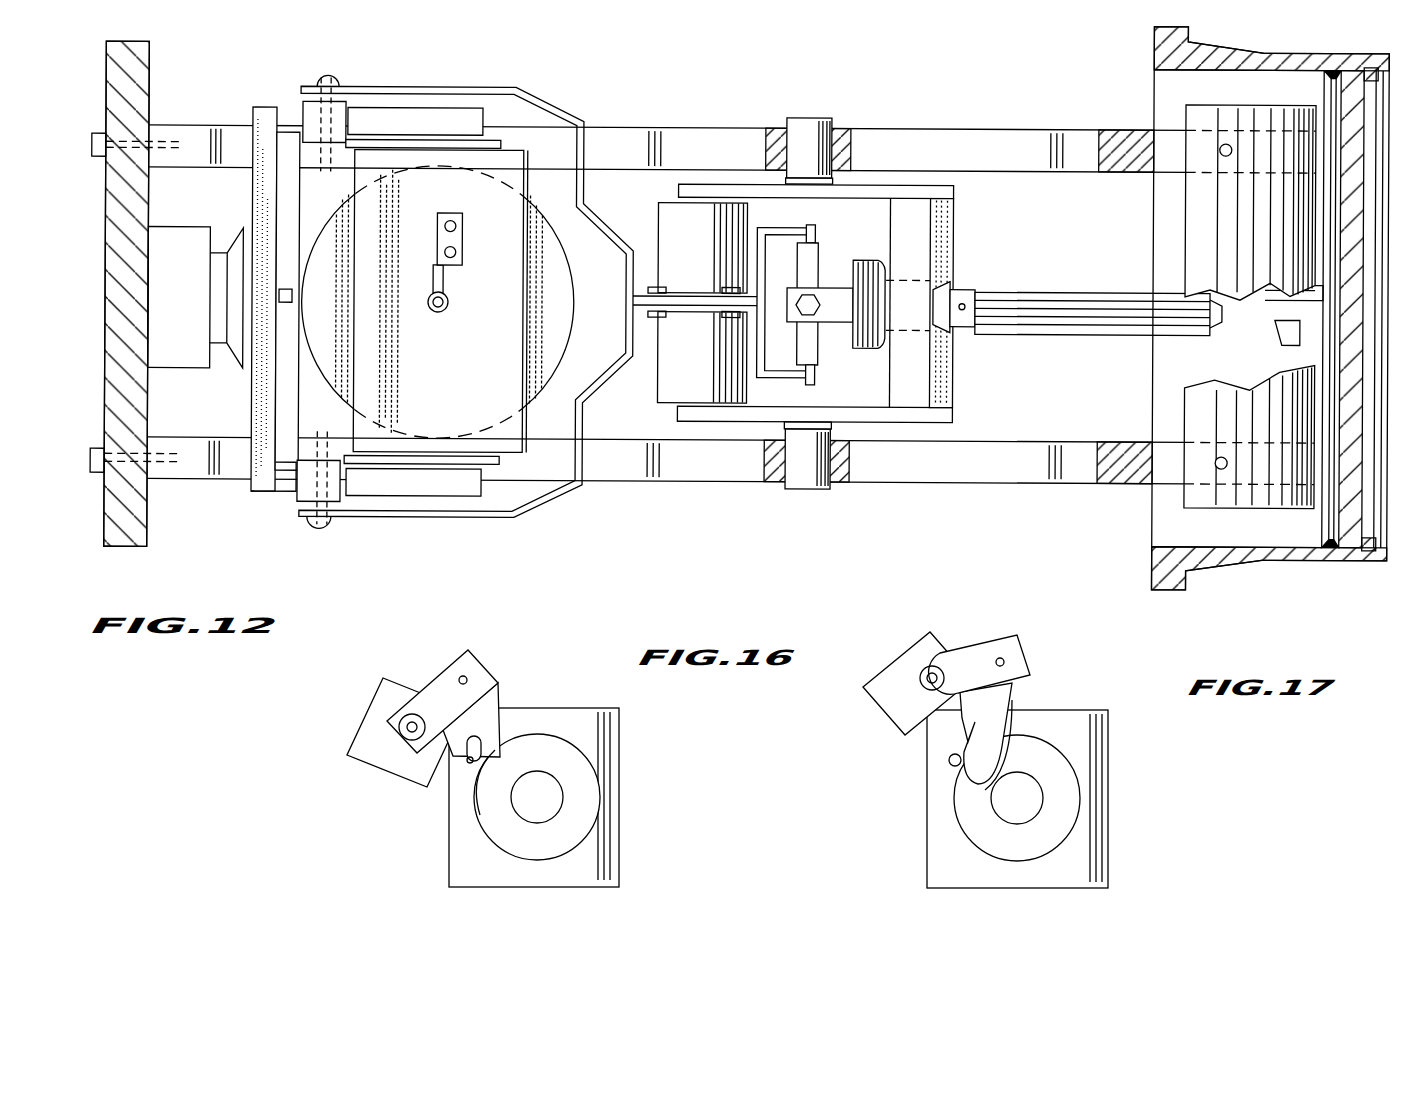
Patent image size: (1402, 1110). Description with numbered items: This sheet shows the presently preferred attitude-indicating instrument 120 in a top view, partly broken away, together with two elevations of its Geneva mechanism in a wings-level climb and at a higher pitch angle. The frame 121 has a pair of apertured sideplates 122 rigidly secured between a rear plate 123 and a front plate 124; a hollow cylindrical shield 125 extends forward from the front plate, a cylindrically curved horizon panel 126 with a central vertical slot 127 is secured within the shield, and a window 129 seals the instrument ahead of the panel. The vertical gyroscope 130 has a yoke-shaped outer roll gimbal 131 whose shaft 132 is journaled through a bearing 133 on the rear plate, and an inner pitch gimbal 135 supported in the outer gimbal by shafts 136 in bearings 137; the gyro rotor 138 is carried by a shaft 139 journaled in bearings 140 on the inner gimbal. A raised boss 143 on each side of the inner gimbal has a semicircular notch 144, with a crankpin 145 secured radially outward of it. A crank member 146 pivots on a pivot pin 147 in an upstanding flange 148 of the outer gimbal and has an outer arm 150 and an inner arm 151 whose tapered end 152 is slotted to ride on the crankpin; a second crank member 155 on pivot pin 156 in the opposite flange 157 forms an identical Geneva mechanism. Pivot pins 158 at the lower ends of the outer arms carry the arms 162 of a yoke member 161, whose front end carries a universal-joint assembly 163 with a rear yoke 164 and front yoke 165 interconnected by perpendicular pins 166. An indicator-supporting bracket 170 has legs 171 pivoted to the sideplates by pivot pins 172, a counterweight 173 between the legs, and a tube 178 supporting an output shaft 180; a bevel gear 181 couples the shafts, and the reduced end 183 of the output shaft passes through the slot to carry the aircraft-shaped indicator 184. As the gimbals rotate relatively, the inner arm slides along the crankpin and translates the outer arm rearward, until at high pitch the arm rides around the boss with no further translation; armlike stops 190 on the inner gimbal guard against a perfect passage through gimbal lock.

In FIG. 12, the attitude-indicating instrument 120 is at (718, 510).
In FIG. 12, the frame 121 is at (978, 126).
In FIG. 12, the apertured sideplates 122 is at (688, 136).
In FIG. 12, the rear plate 123 is at (150, 72).
In FIG. 12, the front plate 124 is at (1153, 28).
In FIG. 12, the hollow cylindrical shield 125 is at (1300, 58).
In FIG. 12, the horizon panel 126 is at (1290, 84).
In FIG. 12, the slot 127 is at (1268, 286).
In FIG. 12, the window 129 is at (1345, 537).
In FIG. 12, the vertical gyroscope 130 is at (240, 190).
In FIG. 12, the outer roll gimbal 131 is at (258, 420).
In FIG. 16, the outer roll gimbal 131 is at (370, 772).
In FIG. 17, the outer roll gimbal 131 is at (890, 724).
In FIG. 12, the shaft 132 is at (222, 352).
In FIG. 12, the bearing 133 is at (186, 228).
In FIG. 12, the inner pitch gimbal 135 is at (534, 416).
In FIG. 16, the inner pitch gimbal 135 is at (620, 765).
In FIG. 17, the inner pitch gimbal 135 is at (1108, 768).
In FIG. 12, the shafts 136 is at (483, 130).
In FIG. 16, the bearings 137 is at (562, 797).
In FIG. 17, the bearings 137 is at (991, 798).
In FIG. 12, the gyro rotor 138 is at (574, 290).
In FIG. 12, the shaft 139 is at (432, 308).
In FIG. 12, the bearings 140 is at (442, 312).
In FIG. 12, the boss 143 is at (523, 165).
In FIG. 16, the boss 143 is at (590, 838).
In FIG. 17, the boss 143 is at (1080, 835).
In FIG. 16, the notch 144 is at (490, 790).
In FIG. 17, the notch 144 is at (962, 785).
In FIG. 16, the crankpin 145 is at (478, 764).
In FIG. 17, the crankpin 145 is at (949, 762).
In FIG. 12, the crank member 146 is at (298, 496).
In FIG. 16, the crank member 146 is at (494, 652).
In FIG. 17, the crank member 146 is at (1032, 644).
In FIG. 12, the pivot pin 147 is at (322, 455).
In FIG. 16, the pivot pin 147 is at (468, 682).
In FIG. 17, the pivot pin 147 is at (1005, 660).
In FIG. 12, the flange 148 is at (298, 468).
In FIG. 16, the flange 148 is at (480, 672).
In FIG. 17, the flange 148 is at (980, 650).
In FIG. 12, the outer arm 150 is at (340, 500).
In FIG. 12, the inner arm 151 is at (352, 458).
In FIG. 16, the end 152 is at (482, 740).
In FIG. 17, the end 152 is at (992, 712).
In FIG. 12, the second crank member 155 is at (300, 110).
In FIG. 12, the pivot pin 156 is at (311, 137).
In FIG. 12, the flange 157 is at (400, 108).
In FIG. 12, the pivot pins 158 is at (335, 80).
In FIG. 12, the yoke member 161 is at (630, 265).
In FIG. 12, the arms 162 is at (530, 98).
In FIG. 12, the universal-joint assembly 163 is at (822, 350).
In FIG. 12, the rear yoke 164 is at (790, 380).
In FIG. 12, the front yoke 165 is at (814, 288).
In FIG. 12, the pins 166 is at (790, 228).
In FIG. 12, the indicator-supporting bracket 170 is at (958, 408).
In FIG. 12, the legs 171 is at (680, 418).
In FIG. 12, the pivot pins 172 is at (838, 150).
In FIG. 12, the counterweight 173 is at (658, 398).
In FIG. 12, the tube 178 is at (1065, 332).
In FIG. 12, the output shaft 180 is at (1222, 318).
In FIG. 12, the bevel gear 181 is at (870, 260).
In FIG. 12, the end 183 is at (1282, 341).
In FIG. 12, the indicator 184 is at (1300, 282).
In FIG. 12, the stops 190 is at (433, 283).